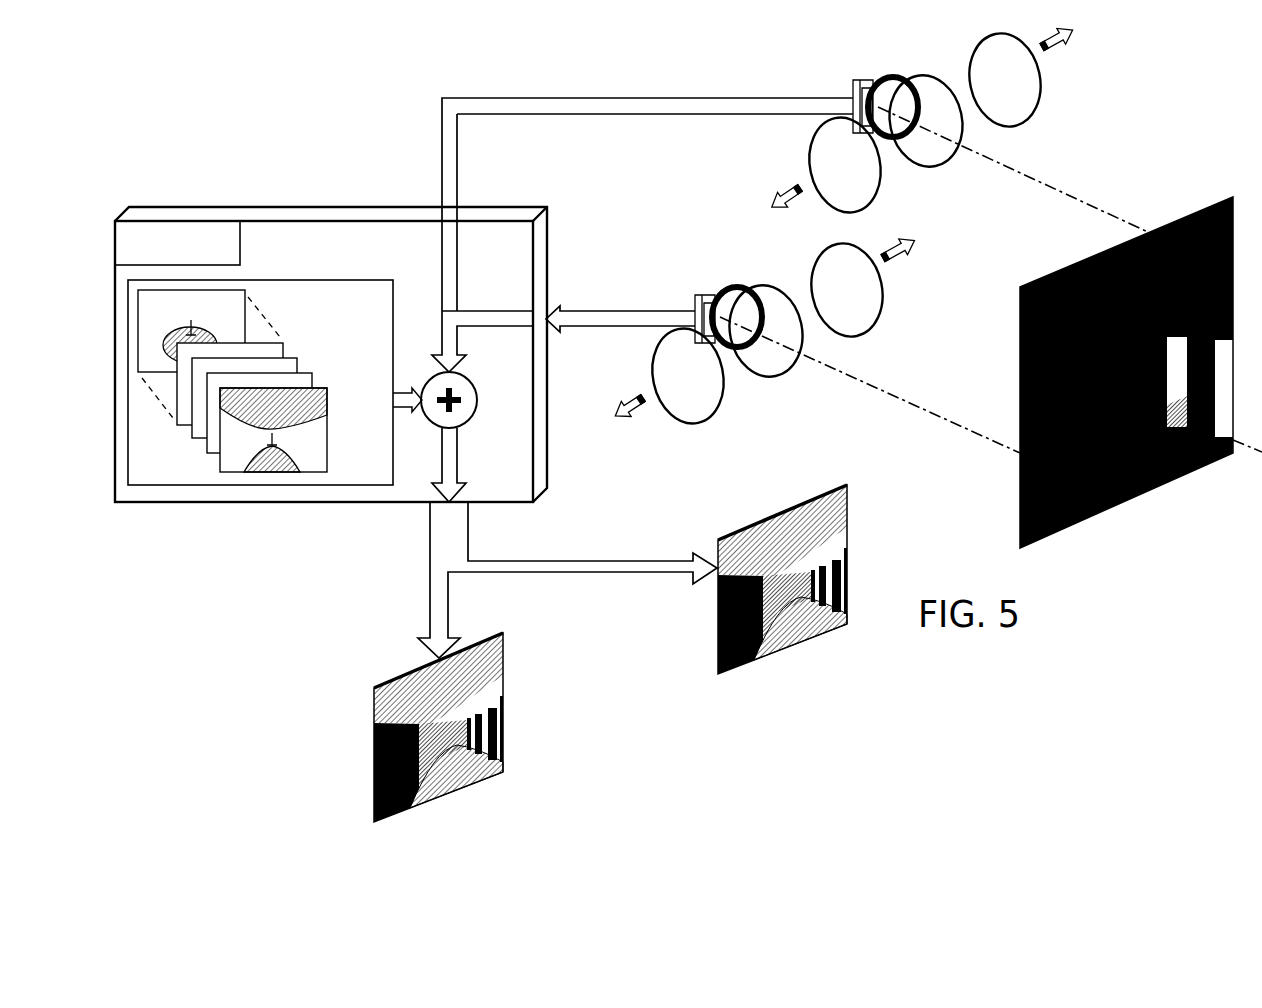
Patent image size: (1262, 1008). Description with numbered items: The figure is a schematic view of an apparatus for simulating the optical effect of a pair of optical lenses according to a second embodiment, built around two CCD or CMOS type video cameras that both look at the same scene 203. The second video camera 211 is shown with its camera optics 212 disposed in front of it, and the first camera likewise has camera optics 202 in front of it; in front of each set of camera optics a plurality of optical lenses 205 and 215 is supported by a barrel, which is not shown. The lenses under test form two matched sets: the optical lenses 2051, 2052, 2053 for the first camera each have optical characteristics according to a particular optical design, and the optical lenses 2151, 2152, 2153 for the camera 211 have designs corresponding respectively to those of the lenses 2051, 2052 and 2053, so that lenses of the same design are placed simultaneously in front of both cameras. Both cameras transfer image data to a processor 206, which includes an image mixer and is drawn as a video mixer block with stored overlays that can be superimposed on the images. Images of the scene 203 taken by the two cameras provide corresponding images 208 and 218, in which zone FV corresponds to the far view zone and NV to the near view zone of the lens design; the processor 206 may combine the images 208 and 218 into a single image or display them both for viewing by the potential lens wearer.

The camera optics 202 is at (740, 293).
The scene 203 is at (1195, 222).
The optical lenses 205 is at (1056, 82).
The processor 206 is at (497, 242).
The image 208 is at (840, 566).
The video camera 211 is at (858, 83).
The camera optics 212 is at (896, 88).
The optical lenses 215 is at (905, 296).
The image 218 is at (497, 712).
The optical lens 2051 is at (1015, 100).
The optical lens 2052 is at (932, 148).
The optical lens 2053 is at (833, 165).
The optical lens 2151 is at (858, 310).
The optical lens 2152 is at (773, 358).
The optical lens 2153 is at (677, 398).